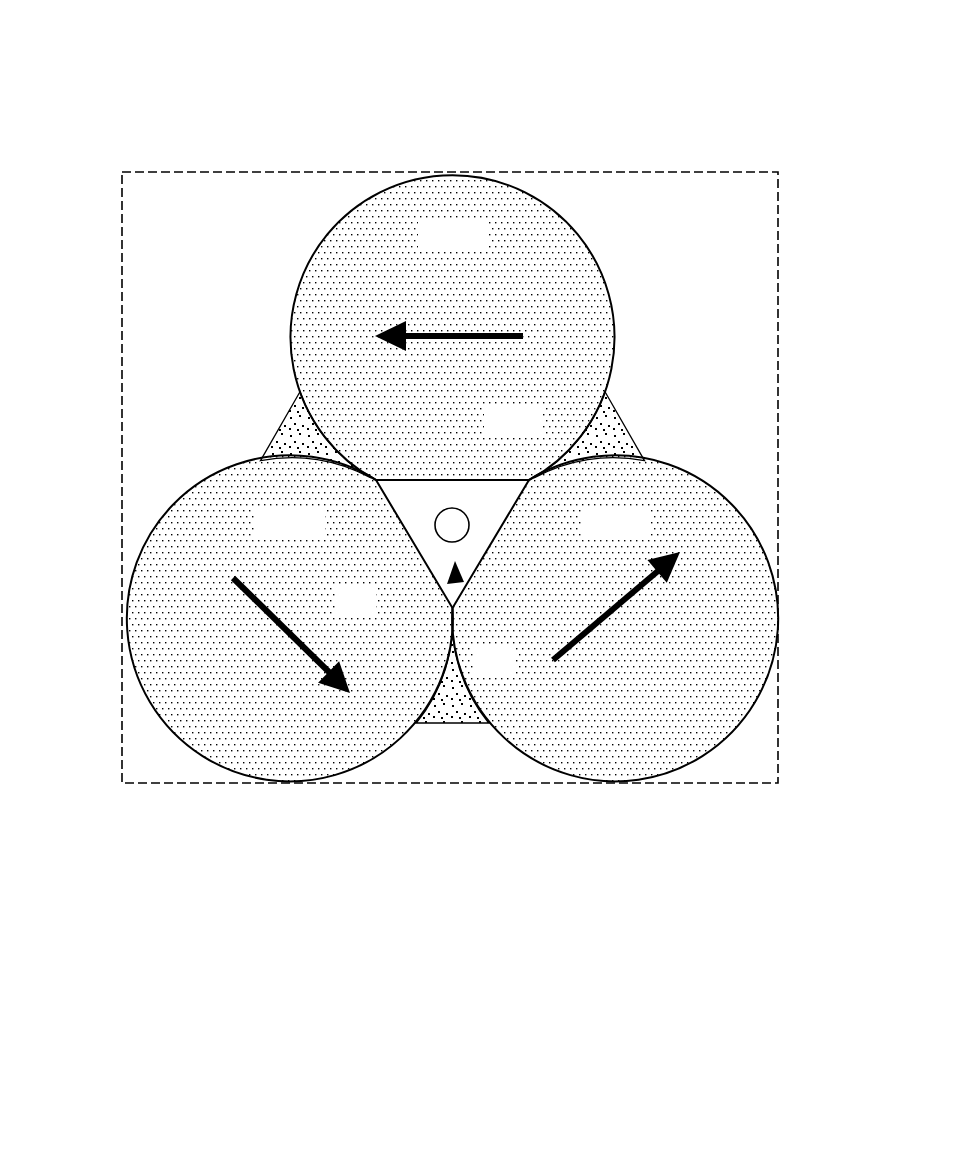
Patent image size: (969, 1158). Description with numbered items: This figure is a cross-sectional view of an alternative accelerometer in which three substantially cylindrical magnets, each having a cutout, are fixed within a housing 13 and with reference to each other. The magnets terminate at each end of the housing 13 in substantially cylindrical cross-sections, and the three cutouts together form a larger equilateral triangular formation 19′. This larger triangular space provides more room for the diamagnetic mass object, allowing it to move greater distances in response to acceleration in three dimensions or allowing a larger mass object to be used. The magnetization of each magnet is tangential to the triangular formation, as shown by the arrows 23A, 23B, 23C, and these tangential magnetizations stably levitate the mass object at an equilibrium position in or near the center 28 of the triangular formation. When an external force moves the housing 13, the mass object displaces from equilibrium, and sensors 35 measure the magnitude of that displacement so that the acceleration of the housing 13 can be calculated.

The housing 13 is at (318, 172).
The larger equilateral triangular formation 19′ is at (458, 583).
The tangential magnetization 23A is at (253, 604).
The tangential magnetization 23B is at (445, 339).
The tangential magnetization 23C is at (633, 603).
The center of the triangular formation 28 is at (450, 542).
The sensors 35 is at (290, 430).